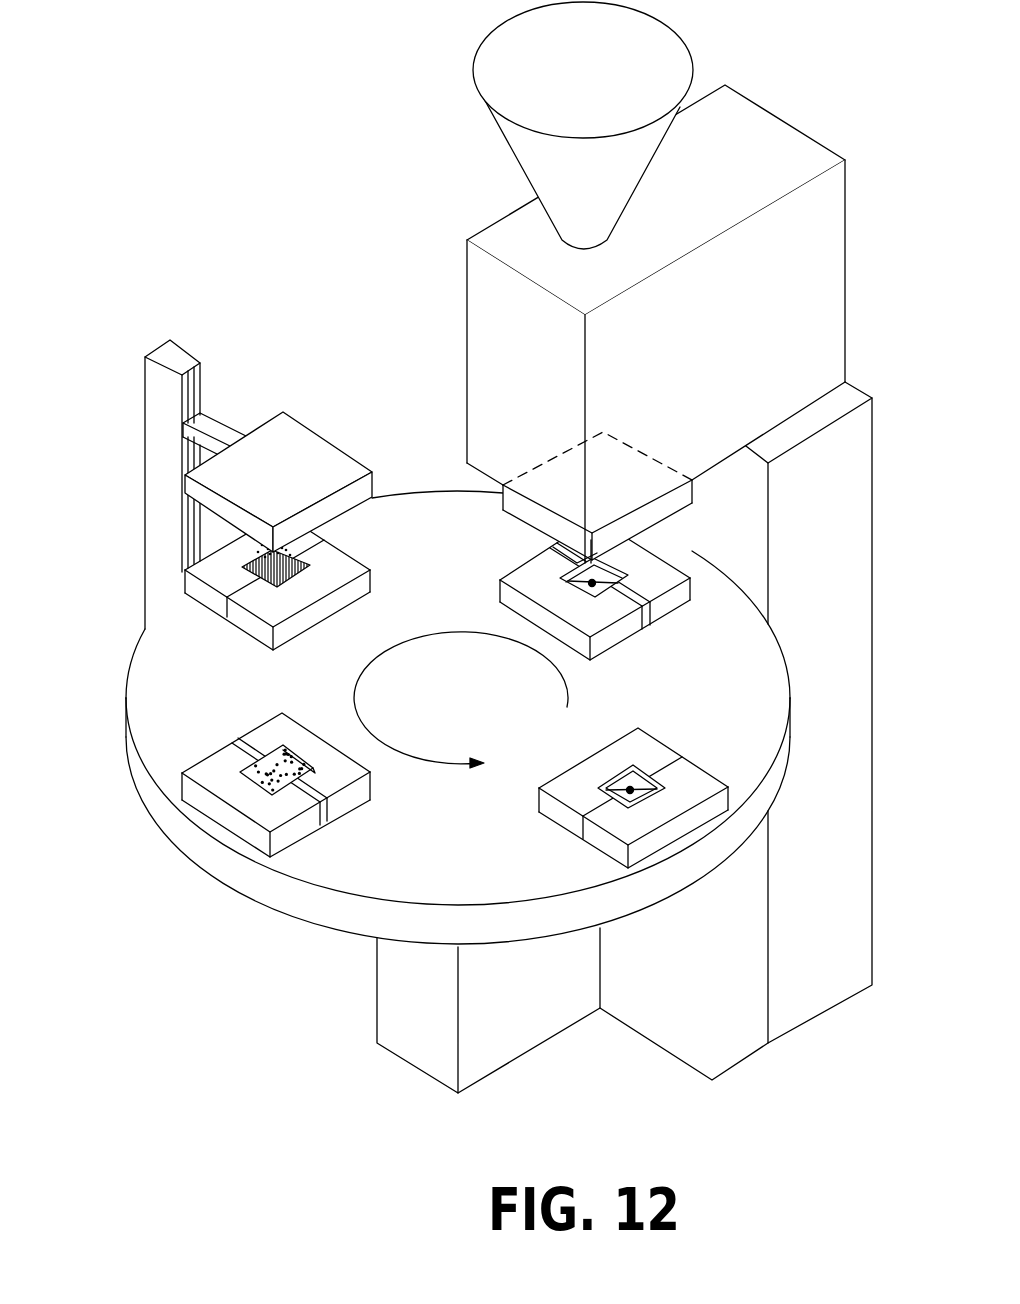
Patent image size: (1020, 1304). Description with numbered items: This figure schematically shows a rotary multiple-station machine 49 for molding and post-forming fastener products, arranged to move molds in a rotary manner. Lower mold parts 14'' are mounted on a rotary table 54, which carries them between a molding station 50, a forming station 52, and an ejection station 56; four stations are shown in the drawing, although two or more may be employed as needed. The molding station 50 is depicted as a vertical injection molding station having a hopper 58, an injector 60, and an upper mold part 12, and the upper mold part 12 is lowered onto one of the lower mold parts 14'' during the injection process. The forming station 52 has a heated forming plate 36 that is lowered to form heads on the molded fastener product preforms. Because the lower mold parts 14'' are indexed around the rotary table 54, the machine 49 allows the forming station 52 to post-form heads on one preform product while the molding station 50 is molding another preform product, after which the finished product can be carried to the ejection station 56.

The multiple-station machine 49 is at (300, 150).
The forming station 52 is at (99, 438).
The heated forming plate 36 is at (297, 491).
The upper mold part 12 is at (512, 517).
The lower mold parts 14'' is at (476, 692).
The hopper 58 is at (597, 88).
The injector 60 is at (704, 367).
The molding station 50 is at (490, 646).
The rotary table 54 is at (275, 912).
The ejection station 56 is at (158, 859).